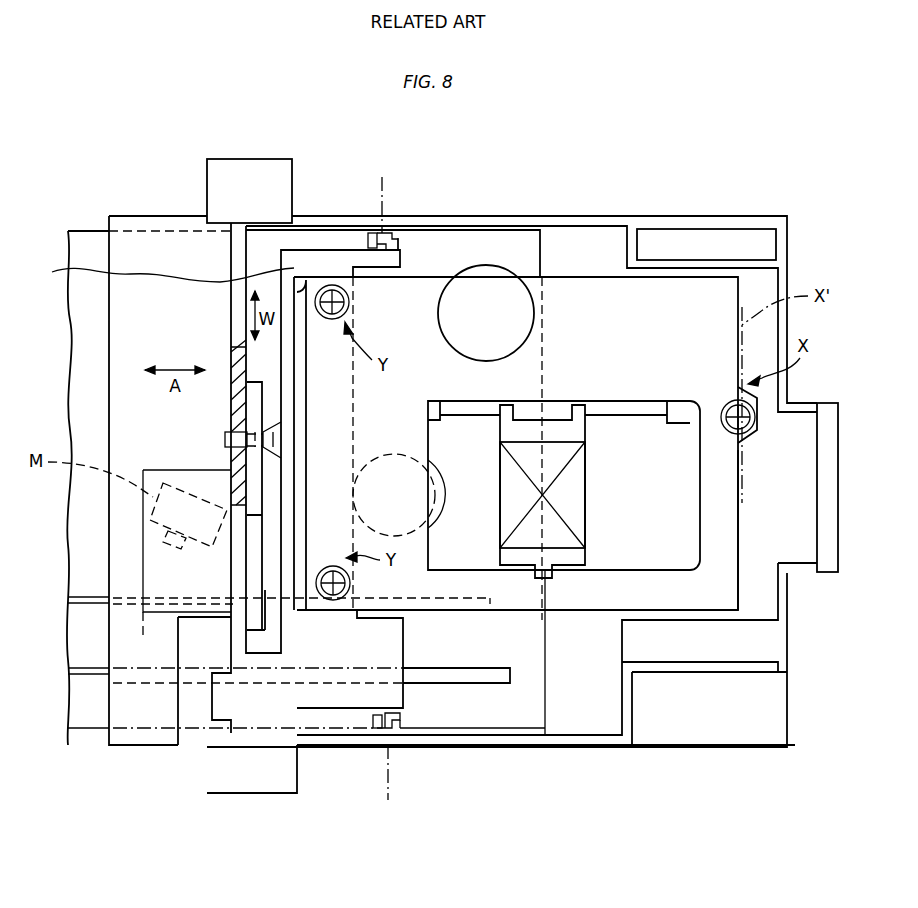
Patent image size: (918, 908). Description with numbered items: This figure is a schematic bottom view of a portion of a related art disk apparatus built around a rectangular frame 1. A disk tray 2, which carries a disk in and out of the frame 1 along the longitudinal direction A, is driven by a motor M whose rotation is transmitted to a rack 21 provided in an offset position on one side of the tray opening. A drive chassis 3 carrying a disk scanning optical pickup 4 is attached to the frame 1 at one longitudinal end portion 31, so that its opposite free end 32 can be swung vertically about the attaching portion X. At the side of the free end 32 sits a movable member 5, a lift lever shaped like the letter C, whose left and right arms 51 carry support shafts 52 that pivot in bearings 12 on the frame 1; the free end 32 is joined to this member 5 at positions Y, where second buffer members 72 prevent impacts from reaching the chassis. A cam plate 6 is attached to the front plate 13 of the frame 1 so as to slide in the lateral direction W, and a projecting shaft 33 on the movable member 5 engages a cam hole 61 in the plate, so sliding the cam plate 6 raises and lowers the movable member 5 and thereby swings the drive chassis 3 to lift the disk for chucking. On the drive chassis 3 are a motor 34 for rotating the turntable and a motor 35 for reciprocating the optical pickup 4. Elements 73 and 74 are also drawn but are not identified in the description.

The frame 1 is at (557, 216).
The disk tray 2 is at (143, 230).
The drive chassis 3 is at (572, 276).
The optical pickup 4 is at (569, 540).
The movable member 5 is at (165, 272).
The cam plate 6 is at (262, 392).
The bearings 12 is at (400, 240).
The front plate 13 is at (232, 349).
The rack 21 is at (143, 675).
The longitudinal end portion 31 is at (742, 565).
The free end 32 is at (302, 290).
The projecting shaft 33 is at (225, 440).
The motor 34 is at (393, 452).
The motor 35 is at (437, 316).
The arms 51 is at (403, 636).
The support shafts 52 is at (380, 232).
The cam hole 61 is at (283, 436).
The second buffer members 72 is at (334, 319).
The mounting bracket 73 is at (733, 431).
The screw hole 74 is at (334, 286).